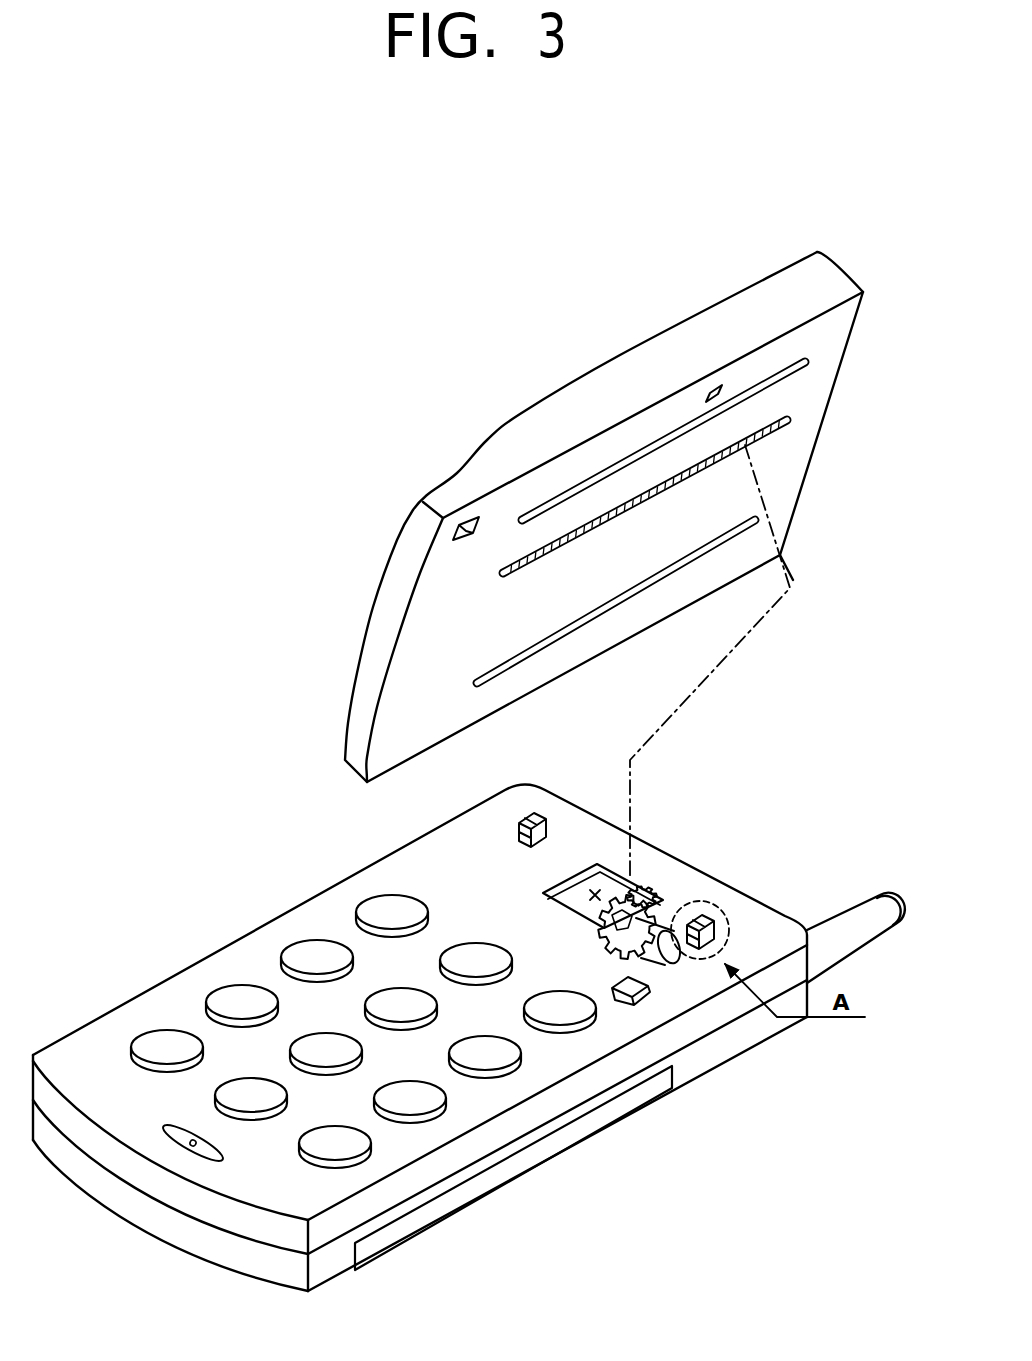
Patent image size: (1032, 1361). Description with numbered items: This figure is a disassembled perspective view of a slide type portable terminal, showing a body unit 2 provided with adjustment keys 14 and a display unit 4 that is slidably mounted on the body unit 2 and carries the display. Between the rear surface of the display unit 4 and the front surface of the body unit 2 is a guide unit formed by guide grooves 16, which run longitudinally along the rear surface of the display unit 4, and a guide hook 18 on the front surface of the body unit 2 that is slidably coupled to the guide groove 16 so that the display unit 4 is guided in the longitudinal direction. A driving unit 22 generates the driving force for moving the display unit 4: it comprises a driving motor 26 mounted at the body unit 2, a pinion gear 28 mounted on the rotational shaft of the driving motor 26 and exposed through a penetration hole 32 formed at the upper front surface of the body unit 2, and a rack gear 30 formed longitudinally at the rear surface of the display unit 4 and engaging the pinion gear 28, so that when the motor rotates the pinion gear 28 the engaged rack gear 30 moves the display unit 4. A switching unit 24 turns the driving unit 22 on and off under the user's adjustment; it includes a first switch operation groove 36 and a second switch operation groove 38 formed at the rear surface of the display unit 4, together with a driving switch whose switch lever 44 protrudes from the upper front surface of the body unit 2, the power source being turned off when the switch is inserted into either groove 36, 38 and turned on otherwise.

The body unit 2 is at (213, 929).
The display unit 4 is at (712, 284).
The adjustment keys 14 is at (147, 1033).
The guide grooves 16 is at (780, 382).
The guide hook 18 is at (517, 830).
The driving unit 22 is at (640, 872).
The switching unit 24 is at (643, 999).
The driving motor 26 is at (668, 910).
The pinion gear 28 is at (647, 893).
The rack gear 30 is at (775, 430).
The penetration hole 32 is at (595, 888).
The first switch operation groove 36 is at (710, 387).
The second switch operation groove 38 is at (463, 523).
The switch lever 44 is at (703, 1013).